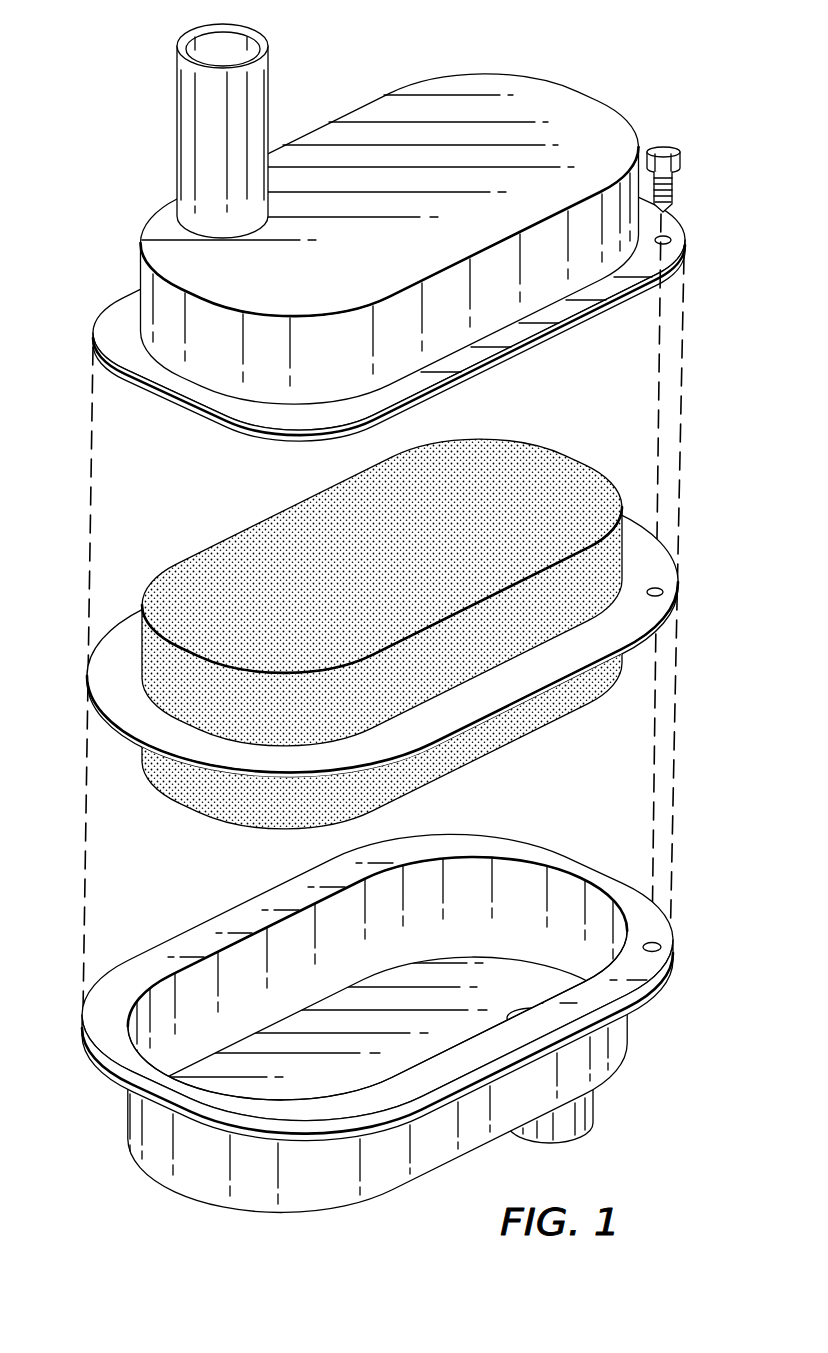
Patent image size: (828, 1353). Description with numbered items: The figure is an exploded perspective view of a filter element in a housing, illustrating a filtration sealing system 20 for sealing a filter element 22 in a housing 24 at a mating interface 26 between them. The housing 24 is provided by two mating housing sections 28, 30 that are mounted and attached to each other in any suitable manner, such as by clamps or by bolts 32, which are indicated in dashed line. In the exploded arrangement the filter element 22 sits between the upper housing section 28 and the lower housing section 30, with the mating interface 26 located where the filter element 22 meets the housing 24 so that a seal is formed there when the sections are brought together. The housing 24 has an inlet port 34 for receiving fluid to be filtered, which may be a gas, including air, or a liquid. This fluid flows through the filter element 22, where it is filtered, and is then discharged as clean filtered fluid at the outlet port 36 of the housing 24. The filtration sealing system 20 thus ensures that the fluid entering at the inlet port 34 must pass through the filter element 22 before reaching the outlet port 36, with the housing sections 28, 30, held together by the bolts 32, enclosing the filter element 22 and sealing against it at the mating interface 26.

The filtration sealing system 20 is at (367, 618).
The filter element 22 is at (182, 583).
The housing 24 is at (142, 232).
The mating interface 26 is at (115, 655).
The housing section 28 is at (150, 313).
The housing section 30 is at (127, 1109).
The bolts 32 is at (680, 181).
The inlet port 34 is at (196, 44).
The outlet port 36 is at (571, 1143).